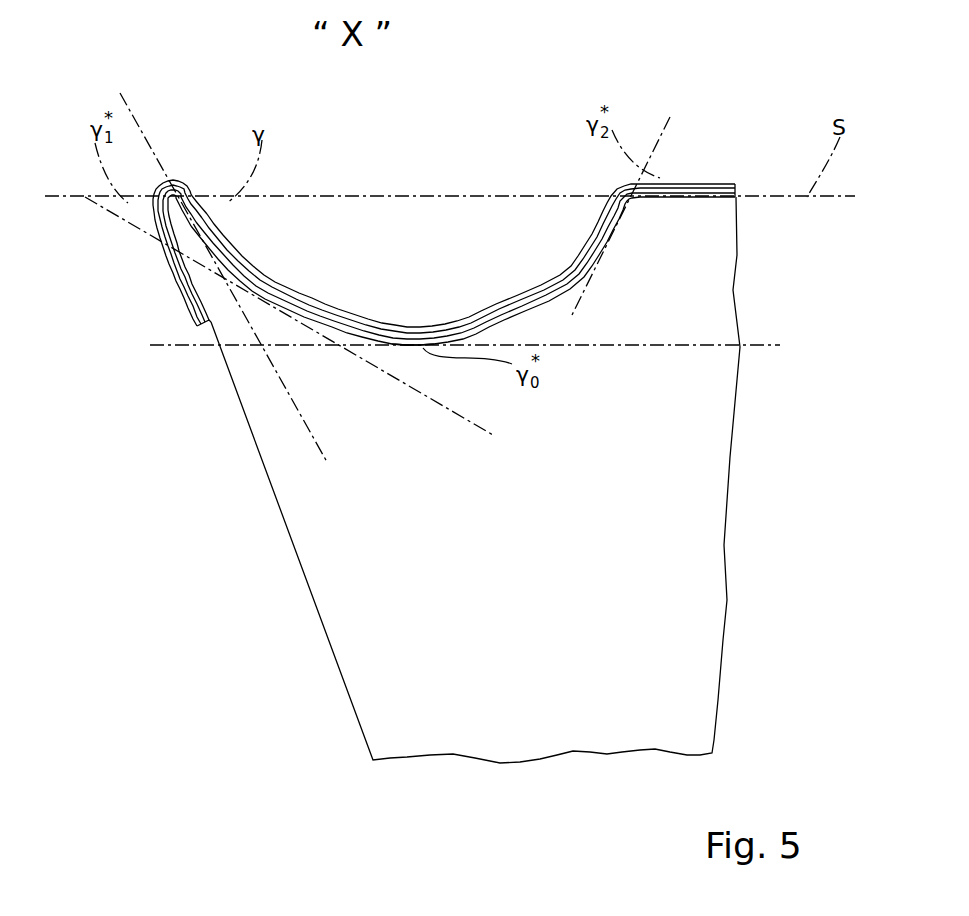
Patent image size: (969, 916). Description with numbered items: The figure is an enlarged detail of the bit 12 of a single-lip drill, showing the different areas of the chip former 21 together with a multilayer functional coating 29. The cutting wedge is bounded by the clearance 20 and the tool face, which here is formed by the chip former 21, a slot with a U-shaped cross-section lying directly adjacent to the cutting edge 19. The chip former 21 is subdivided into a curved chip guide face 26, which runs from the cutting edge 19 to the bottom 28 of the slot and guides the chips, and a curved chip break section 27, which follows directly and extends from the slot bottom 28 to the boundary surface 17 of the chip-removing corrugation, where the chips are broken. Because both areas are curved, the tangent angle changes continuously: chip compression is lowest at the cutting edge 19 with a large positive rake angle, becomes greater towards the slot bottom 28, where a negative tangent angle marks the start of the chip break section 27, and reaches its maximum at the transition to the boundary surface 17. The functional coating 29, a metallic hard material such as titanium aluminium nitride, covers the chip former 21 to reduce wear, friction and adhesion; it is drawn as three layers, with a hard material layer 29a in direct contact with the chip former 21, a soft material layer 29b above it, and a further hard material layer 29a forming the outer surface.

The bit 12 is at (773, 139).
The boundary surface 17 is at (695, 185).
The cutting edge 19 is at (173, 181).
The clearance 20 is at (265, 470).
The chip former 21 is at (406, 189).
The chip guide face 26 is at (235, 291).
The chip break section 27 is at (551, 304).
The bottom 28 is at (410, 347).
The functional coating 29 is at (349, 309).
The hard material layer 29a is at (577, 250).
The soft material layer 29b is at (570, 267).